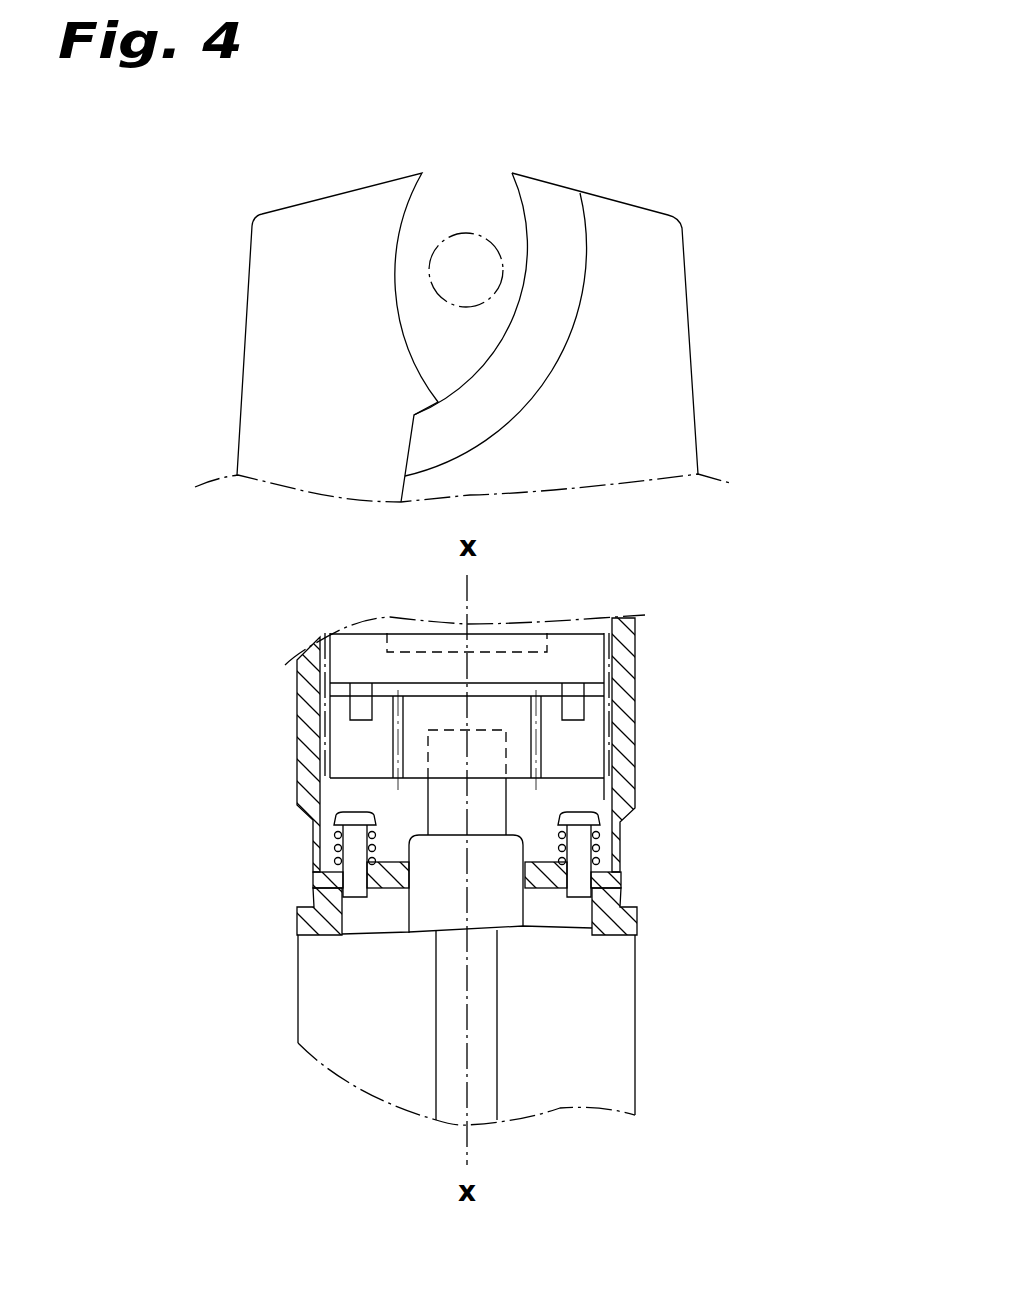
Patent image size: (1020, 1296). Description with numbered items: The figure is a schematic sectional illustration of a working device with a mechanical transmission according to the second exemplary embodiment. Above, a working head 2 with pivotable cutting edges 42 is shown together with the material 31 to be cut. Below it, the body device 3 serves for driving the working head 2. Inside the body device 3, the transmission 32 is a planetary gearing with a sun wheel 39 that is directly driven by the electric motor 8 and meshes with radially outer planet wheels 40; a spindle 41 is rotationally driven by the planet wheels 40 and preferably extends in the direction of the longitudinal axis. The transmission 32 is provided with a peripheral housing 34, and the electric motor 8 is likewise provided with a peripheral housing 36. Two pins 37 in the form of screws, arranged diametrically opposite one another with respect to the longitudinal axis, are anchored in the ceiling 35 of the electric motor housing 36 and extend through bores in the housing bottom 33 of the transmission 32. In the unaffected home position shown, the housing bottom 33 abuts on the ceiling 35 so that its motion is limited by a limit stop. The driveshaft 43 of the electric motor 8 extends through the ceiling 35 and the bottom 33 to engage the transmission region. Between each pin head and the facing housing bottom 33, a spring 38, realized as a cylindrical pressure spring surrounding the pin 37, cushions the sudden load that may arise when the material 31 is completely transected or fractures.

The working head 2 is at (200, 196).
The body device 3 is at (272, 623).
The electric motor 8 is at (600, 1011).
The material to be cut 31 is at (458, 262).
The transmission 32 is at (535, 683).
The housing bottom 33 is at (540, 868).
The peripheral housing 34 is at (312, 773).
The ceiling 35 is at (395, 878).
The electric motor housing 36 is at (610, 925).
The pin 37 is at (352, 865).
The spring 38 is at (335, 843).
The sun wheel 39 is at (433, 713).
The planet wheel 40 is at (367, 735).
The spindle 41 is at (397, 625).
The cutting edge 42 is at (323, 378).
The driveshaft 43 is at (482, 792).